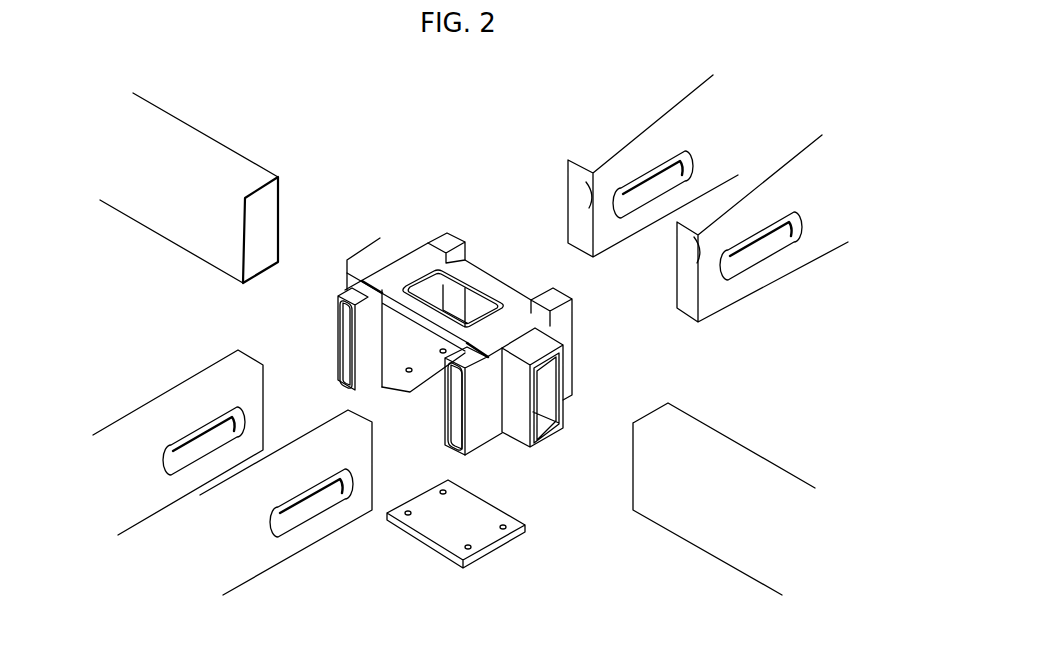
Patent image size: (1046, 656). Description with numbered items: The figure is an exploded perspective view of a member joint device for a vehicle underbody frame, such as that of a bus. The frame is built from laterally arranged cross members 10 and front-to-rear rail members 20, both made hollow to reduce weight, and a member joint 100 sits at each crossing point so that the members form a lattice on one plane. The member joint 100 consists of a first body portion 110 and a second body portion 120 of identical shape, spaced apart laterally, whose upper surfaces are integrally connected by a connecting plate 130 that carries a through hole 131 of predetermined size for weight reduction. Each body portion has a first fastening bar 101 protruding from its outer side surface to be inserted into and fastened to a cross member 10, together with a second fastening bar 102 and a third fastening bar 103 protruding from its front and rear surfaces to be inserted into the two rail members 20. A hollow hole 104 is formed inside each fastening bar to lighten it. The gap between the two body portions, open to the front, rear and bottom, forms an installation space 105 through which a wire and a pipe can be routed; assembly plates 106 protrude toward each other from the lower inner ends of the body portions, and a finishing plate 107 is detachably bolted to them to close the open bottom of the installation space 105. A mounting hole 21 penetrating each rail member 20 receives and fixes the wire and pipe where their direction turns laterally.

The cross member 10 is at (208, 153).
The rail member 20 is at (640, 125).
The mounting hole 21 is at (633, 197).
The member joint 100 is at (456, 302).
The first fastening bar 101 is at (360, 257).
The second fastening bar 102 is at (345, 298).
The third fastening bar 103 is at (437, 245).
The hollow hole 104 is at (348, 338).
The installation space 105 is at (393, 343).
The assembly plate 106 is at (413, 386).
The finishing plate 107 is at (435, 532).
The first body portion 110 is at (397, 270).
The second body portion 120 is at (505, 325).
The connecting plate 130 is at (475, 283).
The through hole 131 is at (452, 283).